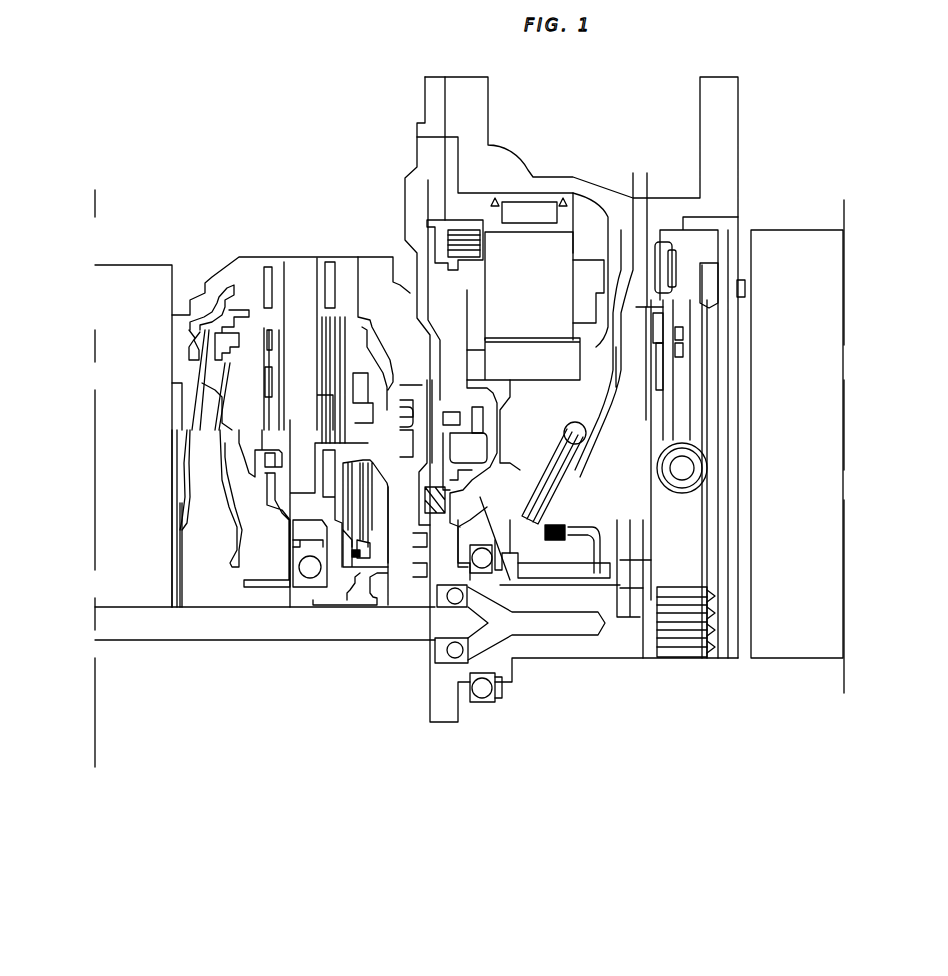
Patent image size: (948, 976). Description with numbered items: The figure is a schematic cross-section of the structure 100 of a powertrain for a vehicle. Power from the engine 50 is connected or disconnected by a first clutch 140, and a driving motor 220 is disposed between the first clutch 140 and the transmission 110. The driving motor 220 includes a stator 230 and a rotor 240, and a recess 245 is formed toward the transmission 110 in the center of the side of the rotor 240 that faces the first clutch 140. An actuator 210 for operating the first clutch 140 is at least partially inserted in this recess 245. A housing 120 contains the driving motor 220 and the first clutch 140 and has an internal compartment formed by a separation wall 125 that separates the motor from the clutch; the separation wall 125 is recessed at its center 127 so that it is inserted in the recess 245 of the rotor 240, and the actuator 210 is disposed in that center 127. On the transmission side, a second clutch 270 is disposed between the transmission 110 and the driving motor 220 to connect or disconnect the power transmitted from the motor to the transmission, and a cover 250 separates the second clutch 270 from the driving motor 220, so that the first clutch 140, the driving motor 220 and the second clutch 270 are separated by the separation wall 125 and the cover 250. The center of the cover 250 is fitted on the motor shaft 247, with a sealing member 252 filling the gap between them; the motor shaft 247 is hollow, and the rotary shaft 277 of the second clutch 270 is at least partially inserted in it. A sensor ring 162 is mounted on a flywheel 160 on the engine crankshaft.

The engine 50 is at (798, 643).
The structure of a powertrain for a vehicle 100 is at (553, 158).
The transmission 110 is at (130, 262).
The housing 120 is at (590, 190).
The separation wall 125 is at (677, 297).
The center 127 is at (523, 432).
The first clutch 140 is at (577, 345).
The flywheel 160 is at (613, 305).
The sensor ring 162 is at (737, 222).
The actuator 210 is at (592, 519).
The driving motor 220 is at (660, 668).
The stator 230 is at (575, 247).
The rotor 240 is at (683, 340).
The recess 245 is at (488, 540).
The motor shaft 247 is at (590, 597).
The cover 250 is at (418, 270).
The sealing member 252 is at (487, 490).
The second clutch 270 is at (293, 242).
The rotary shaft 277 is at (305, 641).